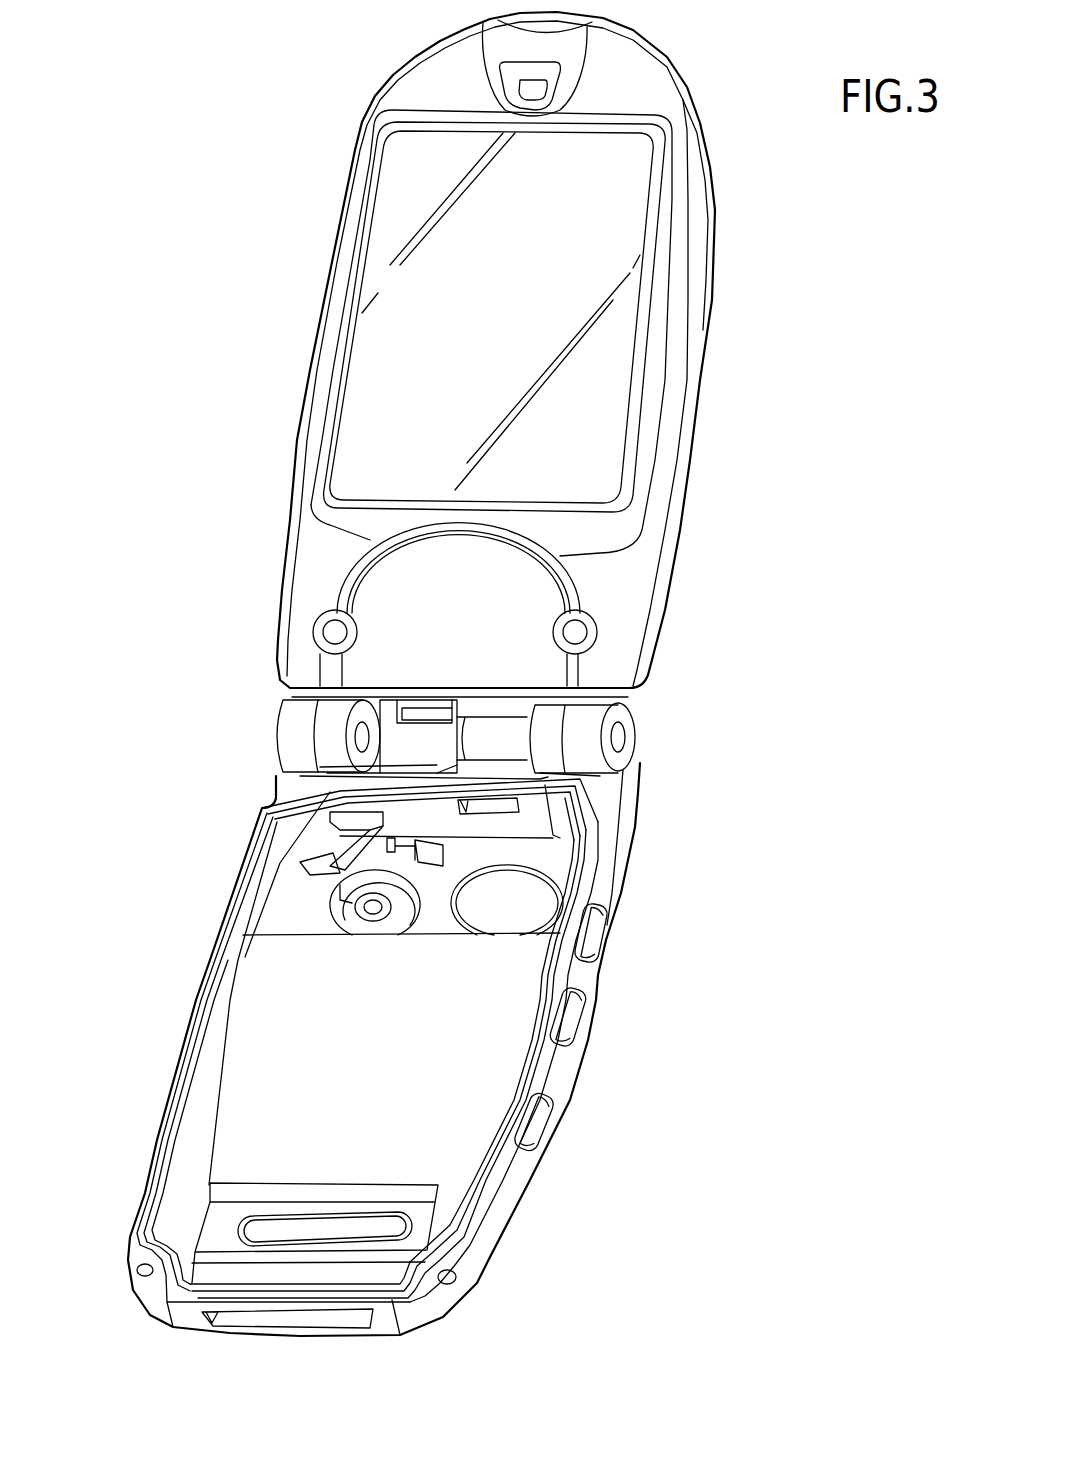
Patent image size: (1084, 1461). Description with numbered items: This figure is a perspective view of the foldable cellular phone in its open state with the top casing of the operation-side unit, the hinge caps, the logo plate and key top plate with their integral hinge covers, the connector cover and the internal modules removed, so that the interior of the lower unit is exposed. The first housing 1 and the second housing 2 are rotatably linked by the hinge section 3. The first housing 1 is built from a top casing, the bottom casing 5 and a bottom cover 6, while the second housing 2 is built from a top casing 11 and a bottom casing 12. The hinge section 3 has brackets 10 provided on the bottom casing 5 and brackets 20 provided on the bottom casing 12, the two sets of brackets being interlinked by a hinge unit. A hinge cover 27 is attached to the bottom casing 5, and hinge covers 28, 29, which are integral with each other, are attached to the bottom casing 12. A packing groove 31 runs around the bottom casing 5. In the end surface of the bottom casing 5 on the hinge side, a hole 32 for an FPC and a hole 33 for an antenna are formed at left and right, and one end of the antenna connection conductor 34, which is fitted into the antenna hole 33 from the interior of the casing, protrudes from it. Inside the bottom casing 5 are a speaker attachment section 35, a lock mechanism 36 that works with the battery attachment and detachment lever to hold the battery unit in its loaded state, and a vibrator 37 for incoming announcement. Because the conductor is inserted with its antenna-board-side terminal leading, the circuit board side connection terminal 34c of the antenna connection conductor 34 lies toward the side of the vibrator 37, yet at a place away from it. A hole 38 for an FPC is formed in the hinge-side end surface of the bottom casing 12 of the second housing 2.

The first housing 1 is at (538, 1190).
The second housing 2 is at (770, 185).
The hinge section 3 is at (655, 740).
The bottom casing 5 is at (590, 877).
The bottom cover 6 is at (577, 977).
The brackets 10 is at (297, 748).
The top casing 11 is at (668, 420).
The bottom casing 12 is at (713, 315).
The brackets 20 is at (340, 717).
The hinge cover 27 is at (493, 740).
The hinge cover 28 is at (397, 747).
The hinge cover 29 is at (553, 773).
The packing groove 31 is at (155, 1156).
The hole for an FPC 32 is at (495, 807).
The hole for an antenna 33 is at (343, 812).
The antenna connection conductor 34 is at (327, 838).
The circuit board side connection terminal 34c is at (317, 862).
The speaker attachment section 35 is at (517, 910).
The lock mechanism 36 is at (332, 900).
The vibrator 37 is at (440, 851).
The hole for an FPC 38 is at (417, 704).